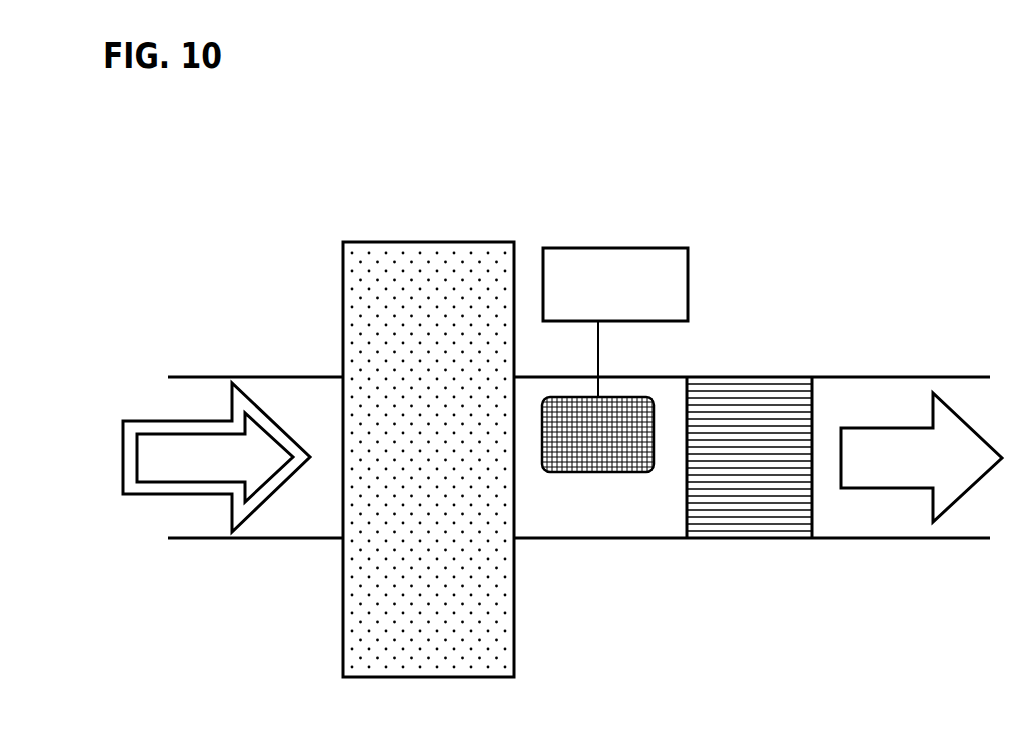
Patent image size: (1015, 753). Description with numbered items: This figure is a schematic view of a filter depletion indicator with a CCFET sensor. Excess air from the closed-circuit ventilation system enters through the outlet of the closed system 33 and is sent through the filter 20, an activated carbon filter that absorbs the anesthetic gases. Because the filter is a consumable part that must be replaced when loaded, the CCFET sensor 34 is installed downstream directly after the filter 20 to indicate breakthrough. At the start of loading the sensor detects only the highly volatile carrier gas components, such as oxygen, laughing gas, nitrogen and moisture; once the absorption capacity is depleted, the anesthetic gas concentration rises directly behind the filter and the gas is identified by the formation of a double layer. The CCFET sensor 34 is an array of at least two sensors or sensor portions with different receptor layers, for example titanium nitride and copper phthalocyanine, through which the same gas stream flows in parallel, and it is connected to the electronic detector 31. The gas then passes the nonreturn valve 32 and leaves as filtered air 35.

The filter 20 is at (413, 277).
The electronic detector 31 is at (637, 277).
The nonreturn valve 32 is at (748, 407).
The outlet of the closed system 33 is at (327, 453).
The CCFET sensor 34 is at (619, 470).
The filtered air 35 is at (897, 488).